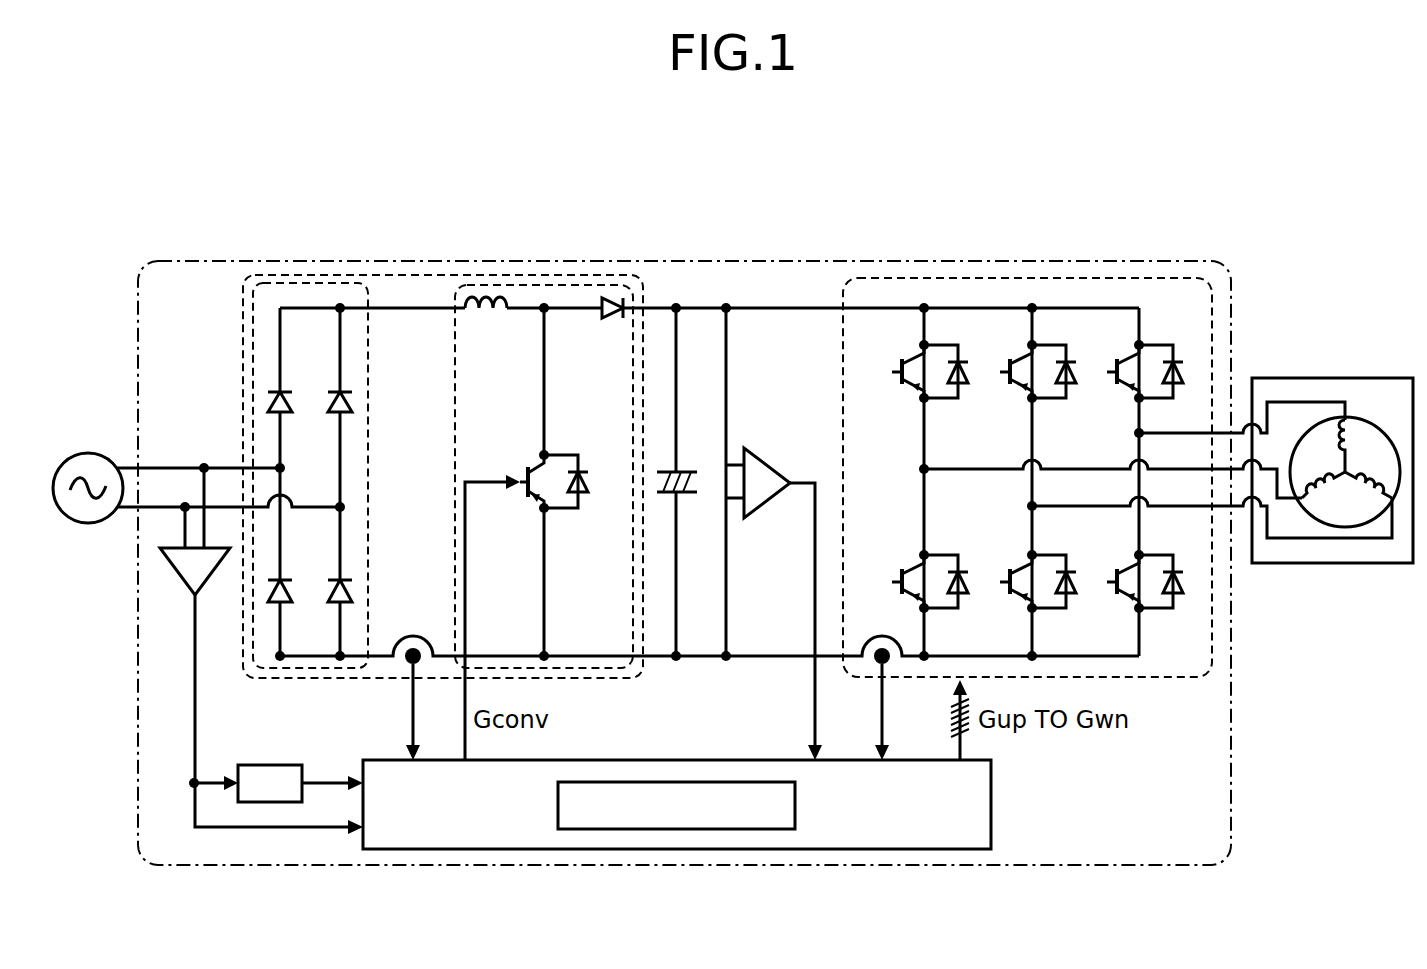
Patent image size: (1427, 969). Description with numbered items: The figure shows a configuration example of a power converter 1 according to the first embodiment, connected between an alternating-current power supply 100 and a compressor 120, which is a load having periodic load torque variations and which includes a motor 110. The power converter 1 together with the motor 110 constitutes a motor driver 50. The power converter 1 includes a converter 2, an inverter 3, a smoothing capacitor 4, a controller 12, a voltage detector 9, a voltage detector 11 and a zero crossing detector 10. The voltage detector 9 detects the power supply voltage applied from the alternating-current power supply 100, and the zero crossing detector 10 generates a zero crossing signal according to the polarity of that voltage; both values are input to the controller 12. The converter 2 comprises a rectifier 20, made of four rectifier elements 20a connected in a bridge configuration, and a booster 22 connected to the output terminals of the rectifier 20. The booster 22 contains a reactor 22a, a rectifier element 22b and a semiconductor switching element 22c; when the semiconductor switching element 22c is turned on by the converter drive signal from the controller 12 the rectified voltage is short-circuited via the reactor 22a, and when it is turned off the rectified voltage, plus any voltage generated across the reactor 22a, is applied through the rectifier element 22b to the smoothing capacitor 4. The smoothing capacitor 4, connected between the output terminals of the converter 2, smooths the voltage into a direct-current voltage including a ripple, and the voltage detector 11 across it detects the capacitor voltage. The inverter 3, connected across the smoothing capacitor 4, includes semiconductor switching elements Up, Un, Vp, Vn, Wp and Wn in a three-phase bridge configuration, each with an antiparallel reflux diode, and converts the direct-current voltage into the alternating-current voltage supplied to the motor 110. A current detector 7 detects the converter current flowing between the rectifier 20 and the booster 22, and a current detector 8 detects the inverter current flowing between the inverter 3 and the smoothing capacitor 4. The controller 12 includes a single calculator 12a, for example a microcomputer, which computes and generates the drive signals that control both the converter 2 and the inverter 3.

The motor driver 50 is at (683, 167).
The power converter 1 is at (1122, 261).
The converter 2 is at (408, 275).
The rectifier 20 is at (308, 283).
The rectifier element 20a is at (353, 410).
The booster 22 is at (541, 285).
The reactor 22a is at (484, 322).
The rectifier element 22b is at (611, 322).
The semiconductor switching element 22c is at (574, 512).
The inverter 3 is at (1027, 278).
The smoothing capacitor 4 is at (694, 470).
The current detector 7 is at (412, 636).
The current detector 8 is at (881, 636).
The voltage detector 9 is at (172, 572).
The zero crossing detector 10 is at (268, 765).
The voltage detector 11 is at (770, 462).
The controller 12 is at (706, 804).
The calculator 12a is at (797, 806).
The alternating-current power supply 100 is at (93, 453).
The motor 110 is at (1380, 422).
The compressor 120 is at (1297, 378).
The semiconductor switching element Up is at (911, 396).
The semiconductor switching element Un is at (908, 559).
The semiconductor switching element Vp is at (1019, 396).
The semiconductor switching element Vn is at (1016, 559).
The semiconductor switching element Wp is at (1126, 396).
The semiconductor switching element Wn is at (1123, 559).